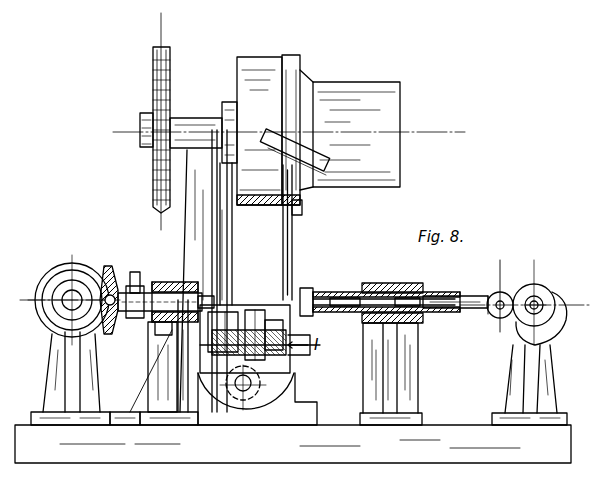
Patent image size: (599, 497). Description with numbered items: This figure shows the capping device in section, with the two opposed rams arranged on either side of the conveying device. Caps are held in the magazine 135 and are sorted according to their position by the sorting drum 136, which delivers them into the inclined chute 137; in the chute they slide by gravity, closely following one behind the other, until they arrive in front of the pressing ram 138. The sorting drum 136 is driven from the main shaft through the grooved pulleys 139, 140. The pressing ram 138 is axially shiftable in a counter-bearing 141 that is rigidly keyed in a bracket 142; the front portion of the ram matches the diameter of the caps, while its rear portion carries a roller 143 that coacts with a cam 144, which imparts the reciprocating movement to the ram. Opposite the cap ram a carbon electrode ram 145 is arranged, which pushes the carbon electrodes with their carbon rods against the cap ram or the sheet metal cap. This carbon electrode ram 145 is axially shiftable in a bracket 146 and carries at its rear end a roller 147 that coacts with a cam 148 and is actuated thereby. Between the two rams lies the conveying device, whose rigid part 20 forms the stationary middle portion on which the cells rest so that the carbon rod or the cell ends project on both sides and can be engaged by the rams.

The rigid part 20 is at (245, 305).
The magazine 135 is at (377, 86).
The sorting drum 136 is at (264, 66).
The inclined chute 137 is at (294, 246).
The pressing ram 138 is at (316, 292).
The grooved pulley 139 is at (155, 185).
The grooved pulley 140 is at (160, 295).
The counter-bearing 141 is at (348, 292).
The bracket 142 is at (398, 285).
The roller 143 is at (500, 292).
The cam 144 is at (556, 300).
The carbon electrode ram 145 is at (192, 282).
The bracket 146 is at (160, 352).
The roller 147 is at (106, 266).
The cam 148 is at (46, 286).